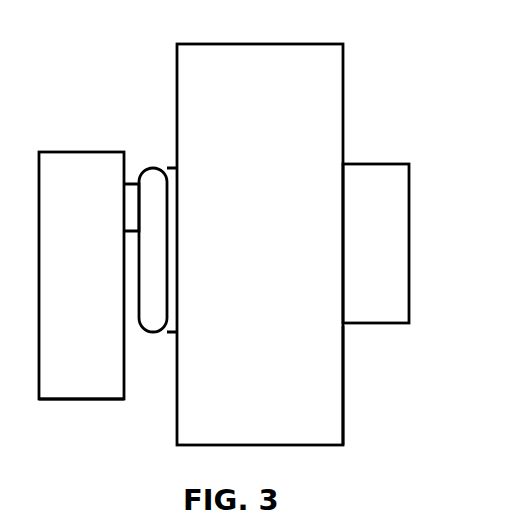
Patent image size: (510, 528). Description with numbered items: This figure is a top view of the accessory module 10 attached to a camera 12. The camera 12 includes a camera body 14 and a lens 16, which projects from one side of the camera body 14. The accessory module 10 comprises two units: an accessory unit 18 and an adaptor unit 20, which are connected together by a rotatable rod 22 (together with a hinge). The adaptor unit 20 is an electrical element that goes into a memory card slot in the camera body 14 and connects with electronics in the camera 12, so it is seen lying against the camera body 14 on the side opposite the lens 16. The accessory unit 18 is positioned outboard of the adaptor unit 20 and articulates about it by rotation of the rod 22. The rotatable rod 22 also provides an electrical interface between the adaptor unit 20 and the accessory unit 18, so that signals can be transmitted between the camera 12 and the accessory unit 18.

The accessory module 10 is at (79, 141).
The camera 12 is at (342, 111).
The camera body 14 is at (335, 341).
The lens 16 is at (401, 192).
The accessory unit 18 is at (61, 392).
The adaptor unit 20 is at (158, 160).
The rotatable rod 22 is at (126, 173).